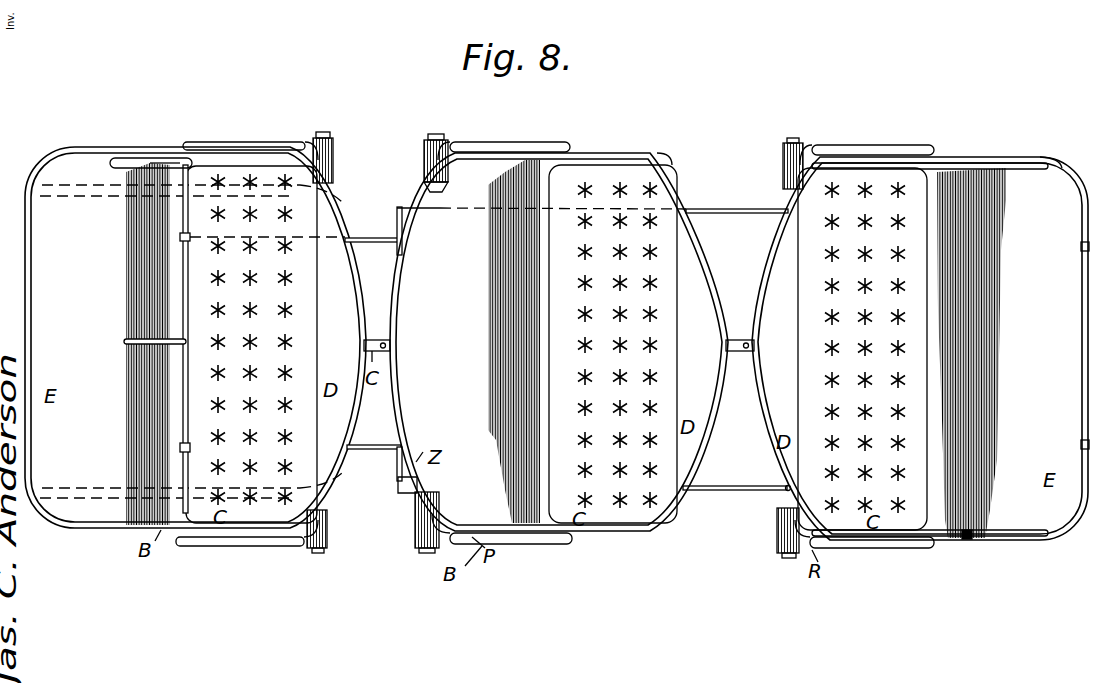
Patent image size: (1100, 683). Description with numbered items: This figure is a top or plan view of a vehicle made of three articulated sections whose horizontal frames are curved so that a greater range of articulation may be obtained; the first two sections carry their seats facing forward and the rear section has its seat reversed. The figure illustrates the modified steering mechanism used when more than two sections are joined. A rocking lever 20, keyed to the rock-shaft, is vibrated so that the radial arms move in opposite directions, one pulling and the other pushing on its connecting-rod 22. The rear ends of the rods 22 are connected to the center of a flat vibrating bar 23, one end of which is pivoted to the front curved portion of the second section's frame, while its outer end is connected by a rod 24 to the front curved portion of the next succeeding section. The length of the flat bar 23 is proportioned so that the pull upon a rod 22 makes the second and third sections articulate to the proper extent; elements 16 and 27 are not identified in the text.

The rod 16 is at (127, 344).
The rocking lever 20 is at (137, 160).
The connecting-rod 22 is at (373, 330).
The flat vibrating bar 23 is at (398, 216).
The rod 24 is at (737, 198).
The clip 27 is at (191, 240).